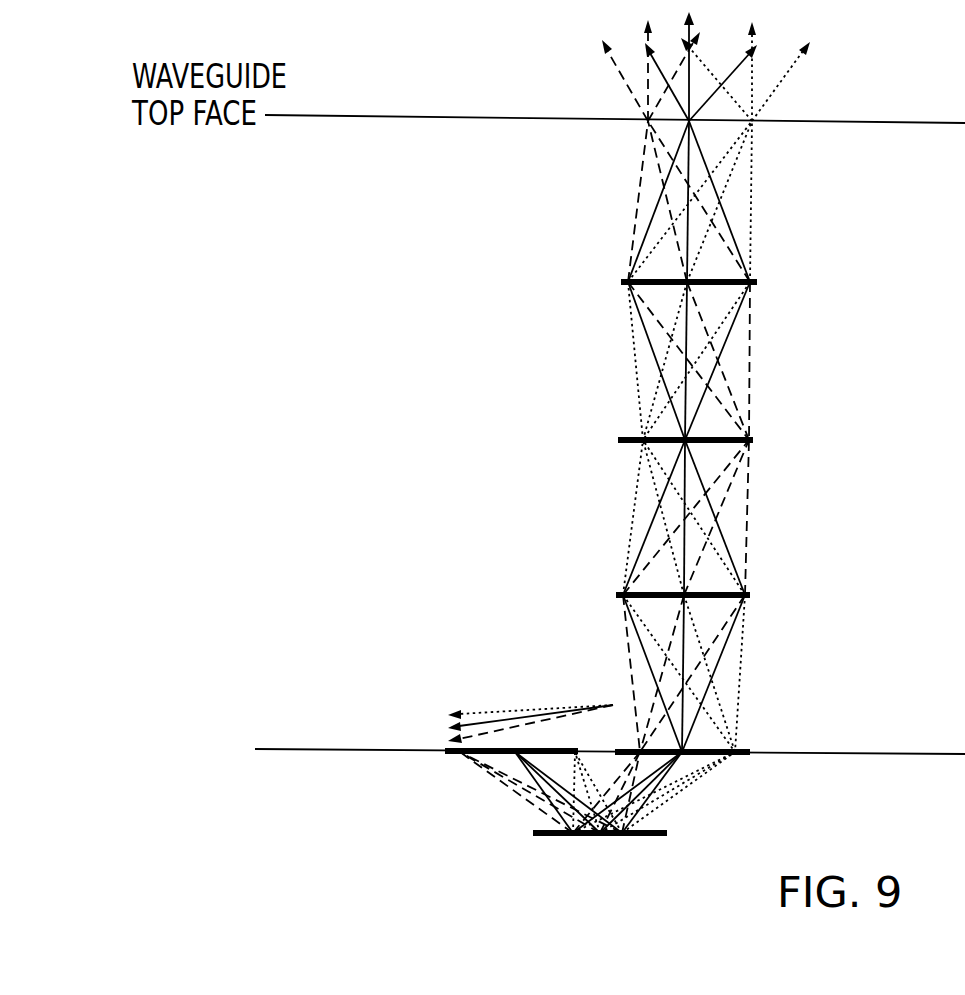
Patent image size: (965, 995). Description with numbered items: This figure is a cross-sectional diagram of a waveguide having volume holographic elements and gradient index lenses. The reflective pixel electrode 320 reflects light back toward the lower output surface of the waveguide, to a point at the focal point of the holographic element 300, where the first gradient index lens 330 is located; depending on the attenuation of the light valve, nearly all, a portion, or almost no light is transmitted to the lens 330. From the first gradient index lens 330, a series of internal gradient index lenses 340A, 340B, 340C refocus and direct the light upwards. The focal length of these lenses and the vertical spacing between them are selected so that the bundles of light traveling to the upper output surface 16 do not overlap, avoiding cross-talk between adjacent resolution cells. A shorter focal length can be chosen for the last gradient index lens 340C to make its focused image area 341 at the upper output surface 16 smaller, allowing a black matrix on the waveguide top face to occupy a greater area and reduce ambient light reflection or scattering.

The upper output surface 16 is at (435, 117).
The image area 341 is at (675, 125).
The internal gradient index lens 340A is at (750, 594).
The internal gradient index lens 340B is at (752, 441).
The last gradient index lens 340C is at (755, 283).
The holographic element 300 is at (450, 751).
The first gradient index lens 330 is at (742, 757).
The reflective pixel electrode 320 is at (600, 835).